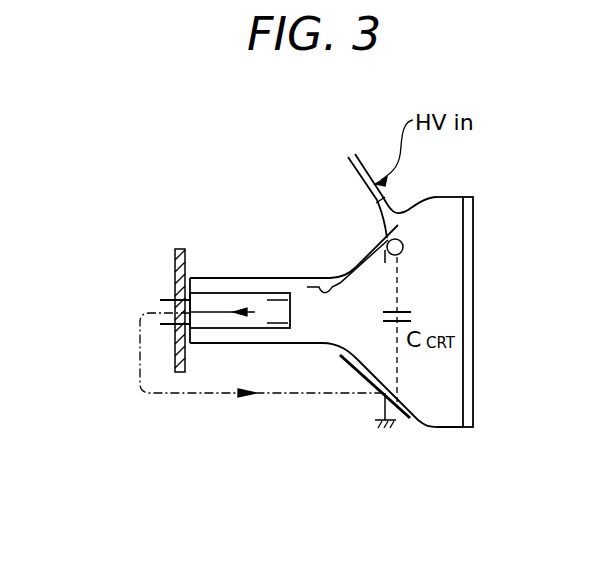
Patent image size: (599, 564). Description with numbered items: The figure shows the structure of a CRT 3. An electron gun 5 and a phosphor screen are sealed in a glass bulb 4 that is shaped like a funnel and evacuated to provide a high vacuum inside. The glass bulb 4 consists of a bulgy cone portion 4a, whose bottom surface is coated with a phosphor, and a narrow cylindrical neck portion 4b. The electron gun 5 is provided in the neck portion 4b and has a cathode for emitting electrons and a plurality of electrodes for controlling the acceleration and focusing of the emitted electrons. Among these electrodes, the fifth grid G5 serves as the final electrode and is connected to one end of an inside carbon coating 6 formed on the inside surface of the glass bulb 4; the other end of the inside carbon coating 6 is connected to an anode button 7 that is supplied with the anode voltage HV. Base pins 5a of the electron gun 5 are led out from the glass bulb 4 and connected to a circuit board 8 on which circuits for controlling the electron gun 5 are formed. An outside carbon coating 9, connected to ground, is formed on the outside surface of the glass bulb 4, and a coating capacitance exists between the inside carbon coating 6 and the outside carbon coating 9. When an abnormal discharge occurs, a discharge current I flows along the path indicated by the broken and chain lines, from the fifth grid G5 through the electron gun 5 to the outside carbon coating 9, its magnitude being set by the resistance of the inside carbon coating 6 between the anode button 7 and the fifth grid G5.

The CRT 3 is at (260, 425).
The glass bulb 4 is at (462, 427).
The cone portion 4a is at (460, 197).
The neck portion 4b is at (200, 278).
The electron gun 5 is at (241, 292).
The base pins 5a is at (163, 300).
The inside carbon coating 6 is at (367, 258).
The anode button 7 is at (396, 229).
The circuit board 8 is at (180, 248).
The outside carbon coating 9 is at (406, 418).
The fifth grid G5 is at (277, 328).